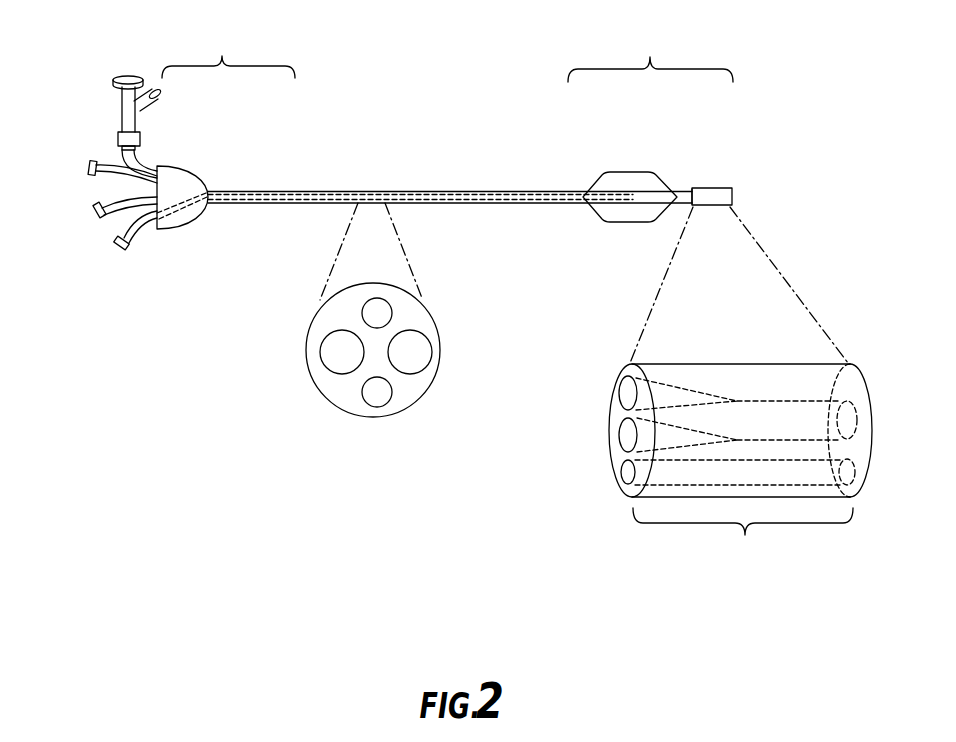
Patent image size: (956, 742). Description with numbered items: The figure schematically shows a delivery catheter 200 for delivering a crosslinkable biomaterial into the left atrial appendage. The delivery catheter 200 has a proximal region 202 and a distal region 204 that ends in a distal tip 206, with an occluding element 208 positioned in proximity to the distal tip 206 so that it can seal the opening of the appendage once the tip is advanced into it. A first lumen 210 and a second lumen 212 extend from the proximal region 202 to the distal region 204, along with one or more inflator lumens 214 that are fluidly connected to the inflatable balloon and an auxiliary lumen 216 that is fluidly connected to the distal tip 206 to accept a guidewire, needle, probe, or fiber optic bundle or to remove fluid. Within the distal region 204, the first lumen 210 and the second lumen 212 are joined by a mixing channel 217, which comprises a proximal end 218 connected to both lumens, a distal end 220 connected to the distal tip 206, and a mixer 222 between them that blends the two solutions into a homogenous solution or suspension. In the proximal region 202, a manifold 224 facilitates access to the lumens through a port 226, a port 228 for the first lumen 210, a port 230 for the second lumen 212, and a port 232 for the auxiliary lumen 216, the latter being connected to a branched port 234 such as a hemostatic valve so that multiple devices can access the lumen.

The delivery catheter 200 is at (383, 150).
The proximal region 202 is at (228, 49).
The distal region 204 is at (650, 51).
The distal tip 206 is at (732, 190).
The occluding element 208 is at (617, 172).
The first lumen 210 is at (328, 347).
The second lumen 212 is at (413, 353).
The inflator lumen 214 is at (375, 308).
The auxiliary lumen 216 is at (372, 397).
The mixing channel 217 is at (708, 188).
The proximal end 218 is at (718, 420).
The distal end 220 is at (857, 425).
The mixer 222 is at (740, 470).
The manifold 224 is at (193, 186).
The extension tube 226 is at (120, 250).
The port for fluid connection to the first lumen 228 is at (95, 214).
The port for fluid connection to the second lumen 230 is at (88, 170).
The port for fluid connection to the auxiliary lumen 232 is at (120, 148).
The branched port 234 is at (122, 105).